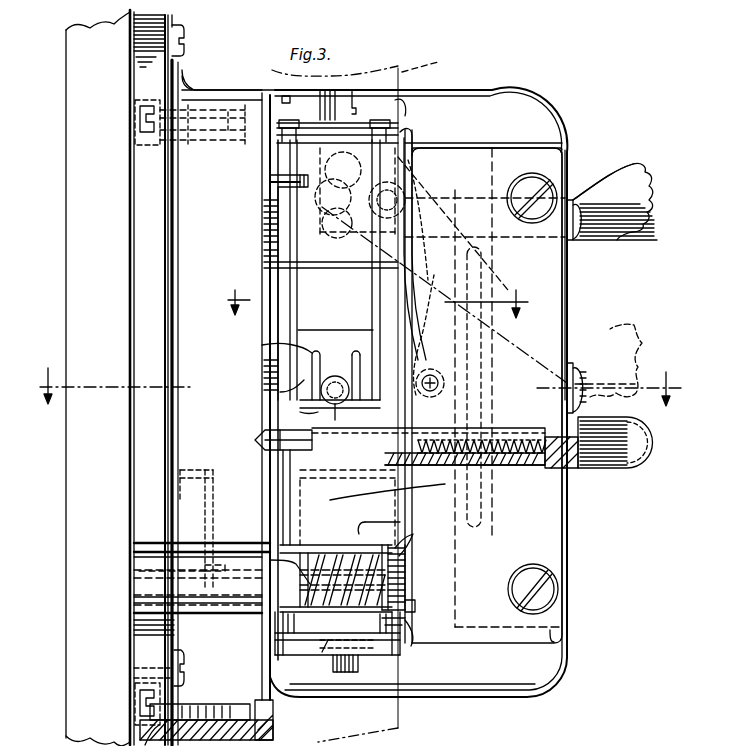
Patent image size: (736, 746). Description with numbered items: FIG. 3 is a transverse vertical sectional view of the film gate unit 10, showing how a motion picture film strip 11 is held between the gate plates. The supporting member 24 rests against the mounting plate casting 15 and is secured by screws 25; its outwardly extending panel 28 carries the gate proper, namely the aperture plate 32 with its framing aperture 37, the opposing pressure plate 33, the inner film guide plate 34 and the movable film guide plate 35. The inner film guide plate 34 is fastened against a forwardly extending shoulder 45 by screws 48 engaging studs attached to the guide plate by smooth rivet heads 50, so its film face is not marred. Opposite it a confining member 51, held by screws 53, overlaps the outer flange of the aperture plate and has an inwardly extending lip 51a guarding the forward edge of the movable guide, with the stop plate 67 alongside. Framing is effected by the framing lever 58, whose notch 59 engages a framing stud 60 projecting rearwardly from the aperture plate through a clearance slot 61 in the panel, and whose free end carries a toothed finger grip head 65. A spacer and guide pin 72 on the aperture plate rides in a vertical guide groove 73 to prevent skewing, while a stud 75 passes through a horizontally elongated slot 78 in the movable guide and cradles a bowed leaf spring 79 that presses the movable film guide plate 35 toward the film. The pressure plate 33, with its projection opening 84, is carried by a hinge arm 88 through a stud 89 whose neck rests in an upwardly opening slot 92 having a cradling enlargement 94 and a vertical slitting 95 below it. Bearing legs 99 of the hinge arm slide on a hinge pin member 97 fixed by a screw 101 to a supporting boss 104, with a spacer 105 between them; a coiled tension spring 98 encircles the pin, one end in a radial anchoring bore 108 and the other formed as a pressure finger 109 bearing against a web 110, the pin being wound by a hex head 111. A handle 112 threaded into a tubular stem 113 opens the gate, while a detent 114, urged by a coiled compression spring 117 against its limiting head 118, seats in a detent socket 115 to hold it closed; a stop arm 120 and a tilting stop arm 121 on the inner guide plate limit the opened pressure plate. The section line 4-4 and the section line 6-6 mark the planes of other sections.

The section line 4- 4 is at (355, 388).
The section line 6- 6 is at (392, 295).
The film gate unit 10 is at (552, 104).
The motion picture film strip 11 is at (365, 399).
The mounting plate casting 15 is at (83, 678).
The supporting member 24 is at (142, 482).
The screws 25 is at (186, 48).
The panel 28 is at (498, 135).
The aperture plate 32 is at (290, 266).
The pressure plate 33 is at (278, 248).
The inner film guide plate 34 is at (270, 160).
The movable film guide plate 35 is at (420, 132).
The framing aperture 37 is at (320, 268).
The shoulder 45 is at (264, 210).
The screws 48 is at (130, 142).
The rivet heads 50 is at (272, 714).
The confining member 51 is at (555, 548).
The lip 51a is at (470, 646).
The screws 53 is at (528, 188).
The framing lever 58 is at (588, 198).
The notch 59 is at (350, 156).
The framing stud 60 is at (264, 228).
The clearance slot 61 is at (280, 82).
The finger grip head 65 is at (674, 166).
The stop plate 67 is at (568, 274).
The spacer and guide pin 72 is at (322, 660).
The vertical guide groove 73 is at (360, 672).
The stud 75 is at (447, 382).
The horizontally elongated slot 78 is at (450, 398).
The bowed leaf spring 79 is at (412, 540).
The projection opening 84 is at (370, 338).
The hinge arm 88 is at (280, 396).
The stud 89 is at (338, 374).
The upwardly opening slot 92 is at (262, 344).
The cradling enlargement 94 is at (264, 370).
The vertical slitting 95 is at (272, 422).
The hinge pin member 97 is at (310, 548).
The coiled tension spring 98 is at (334, 546).
The bearing legs 99 is at (300, 500).
The screw 101 is at (412, 602).
The supporting boss 104 is at (228, 602).
The spacer 105 is at (268, 614).
The radial anchoring bore 108 is at (270, 562).
The pressure finger 109 is at (408, 528).
The web 110 is at (404, 490).
The hex head 111 is at (415, 624).
The handle 112 is at (630, 468).
The tubular stem 113 is at (535, 468).
The detent 114 is at (283, 462).
The detent socket 115 is at (256, 426).
The coiled compression spring 117 is at (513, 478).
The limiting head 118 is at (385, 440).
The stop arm 120 is at (258, 444).
The tilting stop arm 121 is at (272, 180).